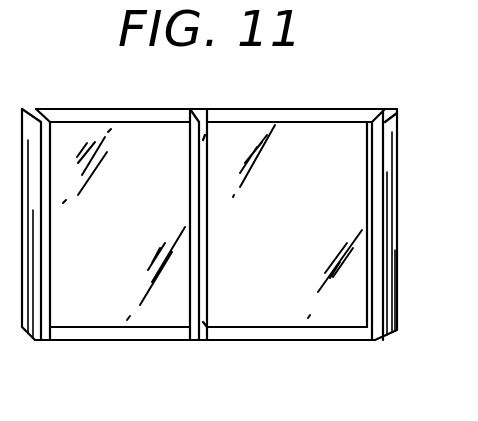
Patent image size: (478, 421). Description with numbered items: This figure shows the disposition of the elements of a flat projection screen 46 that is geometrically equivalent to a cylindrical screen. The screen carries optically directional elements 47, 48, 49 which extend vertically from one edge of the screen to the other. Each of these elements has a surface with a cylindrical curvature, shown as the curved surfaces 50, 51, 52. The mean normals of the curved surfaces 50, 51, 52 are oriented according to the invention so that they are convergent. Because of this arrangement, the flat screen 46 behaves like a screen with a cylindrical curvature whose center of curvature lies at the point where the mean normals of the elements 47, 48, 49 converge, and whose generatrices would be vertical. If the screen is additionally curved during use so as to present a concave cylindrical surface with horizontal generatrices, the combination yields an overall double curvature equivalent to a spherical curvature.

The projection screen 46 is at (257, 303).
The optically directional element 47 is at (212, 155).
The optically directional element 48 is at (35, 145).
The optically directional element 49 is at (382, 200).
The surface with cylindrical curvature 50 is at (192, 150).
The surface with cylindrical curvature 51 is at (50, 308).
The surface with cylindrical curvature 52 is at (372, 268).